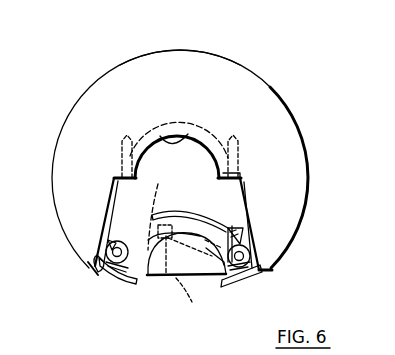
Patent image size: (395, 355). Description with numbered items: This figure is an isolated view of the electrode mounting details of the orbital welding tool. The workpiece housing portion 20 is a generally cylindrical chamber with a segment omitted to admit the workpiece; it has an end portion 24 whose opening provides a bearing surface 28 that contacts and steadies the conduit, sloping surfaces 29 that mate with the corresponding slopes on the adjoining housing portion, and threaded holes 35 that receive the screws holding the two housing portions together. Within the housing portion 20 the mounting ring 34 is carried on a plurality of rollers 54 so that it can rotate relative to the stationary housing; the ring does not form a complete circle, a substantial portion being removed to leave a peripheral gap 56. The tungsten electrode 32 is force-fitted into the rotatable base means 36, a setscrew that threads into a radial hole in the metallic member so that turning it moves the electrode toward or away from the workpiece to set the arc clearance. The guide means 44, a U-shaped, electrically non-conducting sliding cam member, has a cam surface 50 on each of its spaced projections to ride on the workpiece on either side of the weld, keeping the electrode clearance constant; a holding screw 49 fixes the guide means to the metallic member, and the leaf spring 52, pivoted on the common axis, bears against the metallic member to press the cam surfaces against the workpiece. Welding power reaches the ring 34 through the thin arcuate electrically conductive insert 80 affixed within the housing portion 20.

The workpiece housing portion 20 is at (278, 88).
The end portion 24 is at (172, 62).
The bearing surface 28 is at (177, 137).
The threaded holes 35 is at (121, 152).
The rotatable base means 36 is at (158, 210).
The leaf spring 52 is at (210, 213).
The mounting ring 34 is at (106, 236).
The holding screw 49 is at (238, 228).
The rollers 54 is at (108, 247).
The sloping surfaces 29 is at (97, 273).
The arcuate electrically conductive insert 80 is at (125, 283).
The cam surface 50 is at (164, 279).
The guide means 44 is at (206, 270).
The tungsten electrode 32 is at (188, 298).
The peripheral gap 56 is at (175, 291).